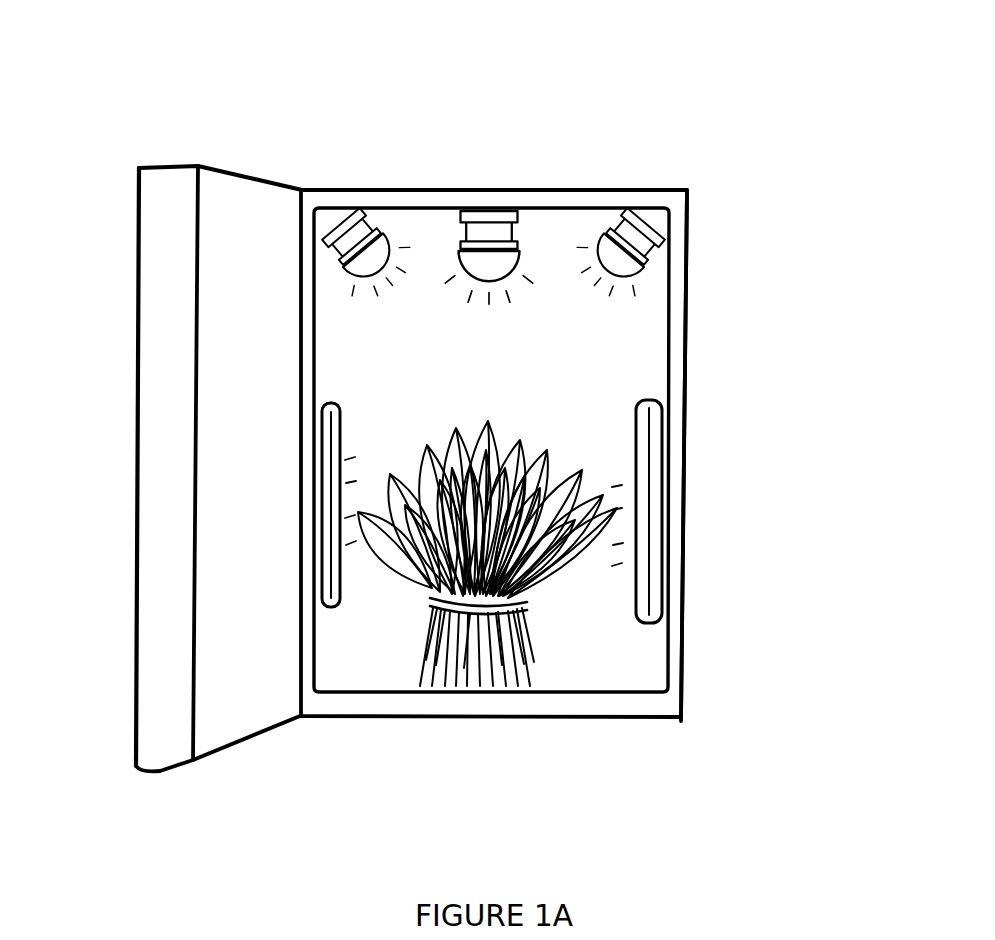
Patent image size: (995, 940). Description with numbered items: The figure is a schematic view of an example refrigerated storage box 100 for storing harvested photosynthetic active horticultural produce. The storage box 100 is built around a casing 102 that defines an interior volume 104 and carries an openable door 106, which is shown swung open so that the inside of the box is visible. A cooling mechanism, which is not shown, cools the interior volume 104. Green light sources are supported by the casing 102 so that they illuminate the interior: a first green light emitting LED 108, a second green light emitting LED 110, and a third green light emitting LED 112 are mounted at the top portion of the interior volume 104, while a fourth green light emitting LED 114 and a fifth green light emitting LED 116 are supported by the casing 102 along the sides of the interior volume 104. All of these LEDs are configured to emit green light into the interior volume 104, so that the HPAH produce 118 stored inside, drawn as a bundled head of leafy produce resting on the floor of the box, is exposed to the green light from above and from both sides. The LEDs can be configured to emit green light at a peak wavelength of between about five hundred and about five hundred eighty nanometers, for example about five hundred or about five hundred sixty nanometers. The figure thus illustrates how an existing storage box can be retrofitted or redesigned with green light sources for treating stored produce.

The storage box 100 is at (506, 105).
The casing 102 is at (661, 206).
The interior volume 104 is at (577, 344).
The openable door 106 is at (224, 200).
The first green light emitting LED 108 is at (379, 240).
The second green light emitting LED 110 is at (508, 262).
The third green light emitting LED 112 is at (630, 270).
The fourth green light emitting LED 114 is at (616, 462).
The fifth green light emitting LED 116 is at (320, 480).
The HPAH produce 118 is at (540, 447).